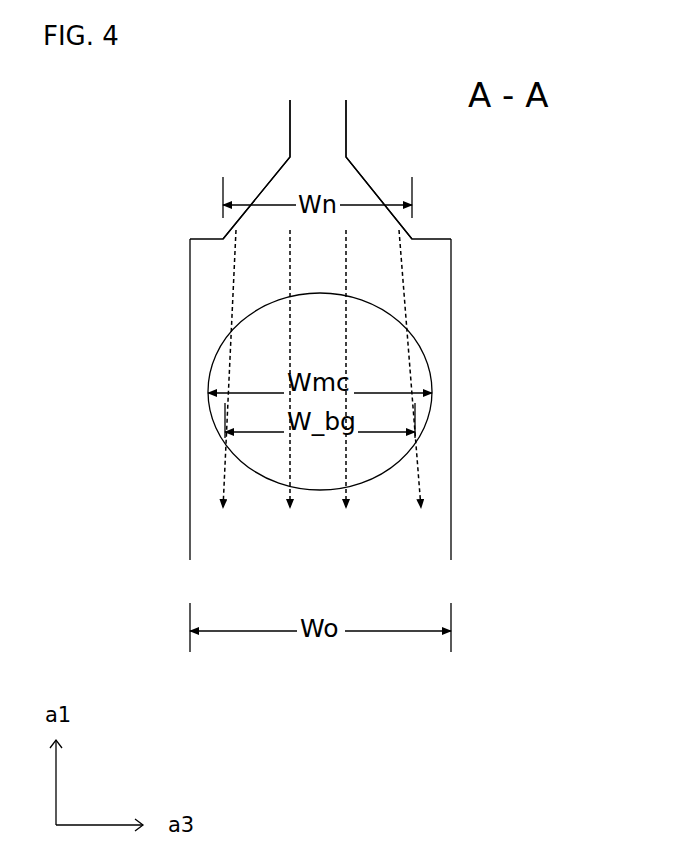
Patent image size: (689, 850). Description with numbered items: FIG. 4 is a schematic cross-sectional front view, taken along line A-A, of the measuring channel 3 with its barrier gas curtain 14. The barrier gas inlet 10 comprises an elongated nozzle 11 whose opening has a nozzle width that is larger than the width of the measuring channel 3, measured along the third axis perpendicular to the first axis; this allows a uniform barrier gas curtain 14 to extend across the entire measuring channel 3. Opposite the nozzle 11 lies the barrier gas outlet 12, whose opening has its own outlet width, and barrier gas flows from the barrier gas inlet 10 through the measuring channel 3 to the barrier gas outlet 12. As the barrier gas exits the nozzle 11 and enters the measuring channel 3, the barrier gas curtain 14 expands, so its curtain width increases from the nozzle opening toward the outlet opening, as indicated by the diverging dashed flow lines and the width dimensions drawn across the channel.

The barrier gas inlet 10 is at (318, 176).
The nozzle 11 is at (318, 176).
The barrier gas outlet 12 is at (322, 560).
The measuring channel 3 is at (389, 359).
The barrier gas curtain 14 is at (290, 333).